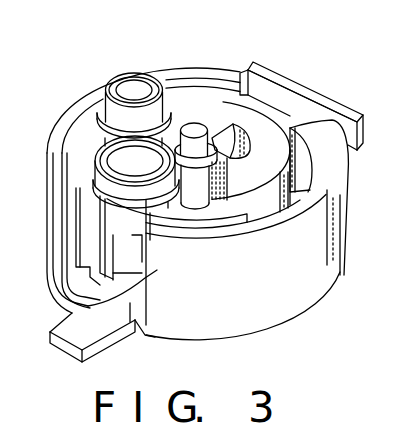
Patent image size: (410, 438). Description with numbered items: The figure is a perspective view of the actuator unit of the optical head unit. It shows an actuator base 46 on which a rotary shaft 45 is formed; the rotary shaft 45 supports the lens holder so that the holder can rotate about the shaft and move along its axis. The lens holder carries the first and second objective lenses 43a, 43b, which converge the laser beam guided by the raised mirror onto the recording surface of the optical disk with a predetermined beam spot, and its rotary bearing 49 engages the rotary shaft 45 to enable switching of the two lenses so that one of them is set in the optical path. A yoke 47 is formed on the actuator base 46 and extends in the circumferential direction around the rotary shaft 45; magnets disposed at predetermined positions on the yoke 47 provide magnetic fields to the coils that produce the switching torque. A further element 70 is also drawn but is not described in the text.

The first objective lens 43a is at (128, 84).
The second objective lens 43b is at (125, 156).
The rotary shaft 45 is at (197, 124).
The actuator base 46 is at (88, 317).
The yoke 47 is at (73, 102).
The rotary bearing 49 is at (252, 168).
The fin 70 is at (227, 127).